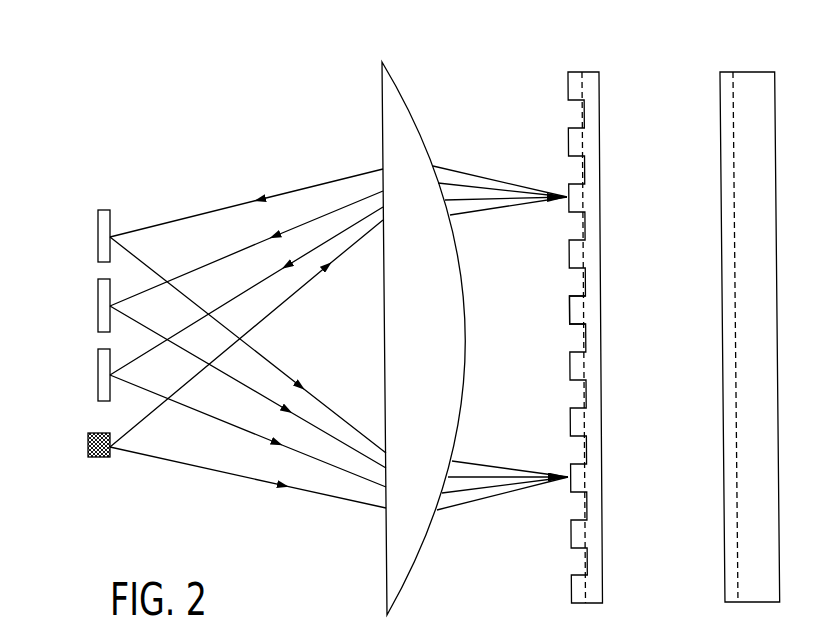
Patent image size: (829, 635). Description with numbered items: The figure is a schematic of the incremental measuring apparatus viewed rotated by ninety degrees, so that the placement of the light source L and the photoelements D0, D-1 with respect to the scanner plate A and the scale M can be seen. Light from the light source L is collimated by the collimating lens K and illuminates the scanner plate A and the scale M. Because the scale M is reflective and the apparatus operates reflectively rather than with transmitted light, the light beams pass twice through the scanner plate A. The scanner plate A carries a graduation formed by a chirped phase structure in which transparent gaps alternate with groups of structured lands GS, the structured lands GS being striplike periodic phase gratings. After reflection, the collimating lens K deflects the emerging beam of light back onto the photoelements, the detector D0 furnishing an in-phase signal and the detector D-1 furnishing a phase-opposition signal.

The collimating lens K is at (402, 110).
The photo detector D0 is at (98, 299).
The photo detector D-1 is at (98, 378).
The light source L is at (88, 452).
The scanner plate A is at (590, 82).
The structured lands GS is at (570, 313).
The scale M is at (752, 82).